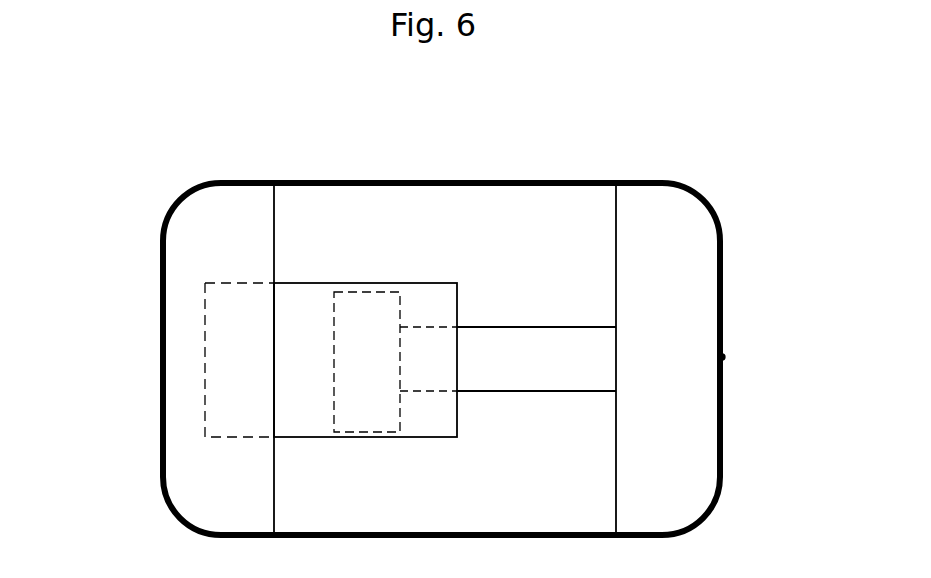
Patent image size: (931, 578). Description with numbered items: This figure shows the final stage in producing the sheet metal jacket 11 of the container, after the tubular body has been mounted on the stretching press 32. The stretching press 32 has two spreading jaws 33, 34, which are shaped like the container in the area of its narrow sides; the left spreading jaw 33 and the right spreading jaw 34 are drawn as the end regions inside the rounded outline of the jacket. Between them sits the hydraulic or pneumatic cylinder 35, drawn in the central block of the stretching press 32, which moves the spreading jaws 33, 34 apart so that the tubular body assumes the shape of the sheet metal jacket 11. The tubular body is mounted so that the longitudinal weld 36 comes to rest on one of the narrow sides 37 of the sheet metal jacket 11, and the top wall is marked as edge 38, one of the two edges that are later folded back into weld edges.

The sheet metal jacket 11 is at (549, 184).
The stretching press 32 is at (443, 250).
The spreading jaw 33 is at (225, 213).
The spreading jaw 34 is at (668, 228).
The hydraulic or pneumatic cylinder 35 is at (322, 283).
The longitudinal weld 36 is at (725, 360).
The narrow side 37 is at (162, 306).
The edge 38 is at (442, 132).